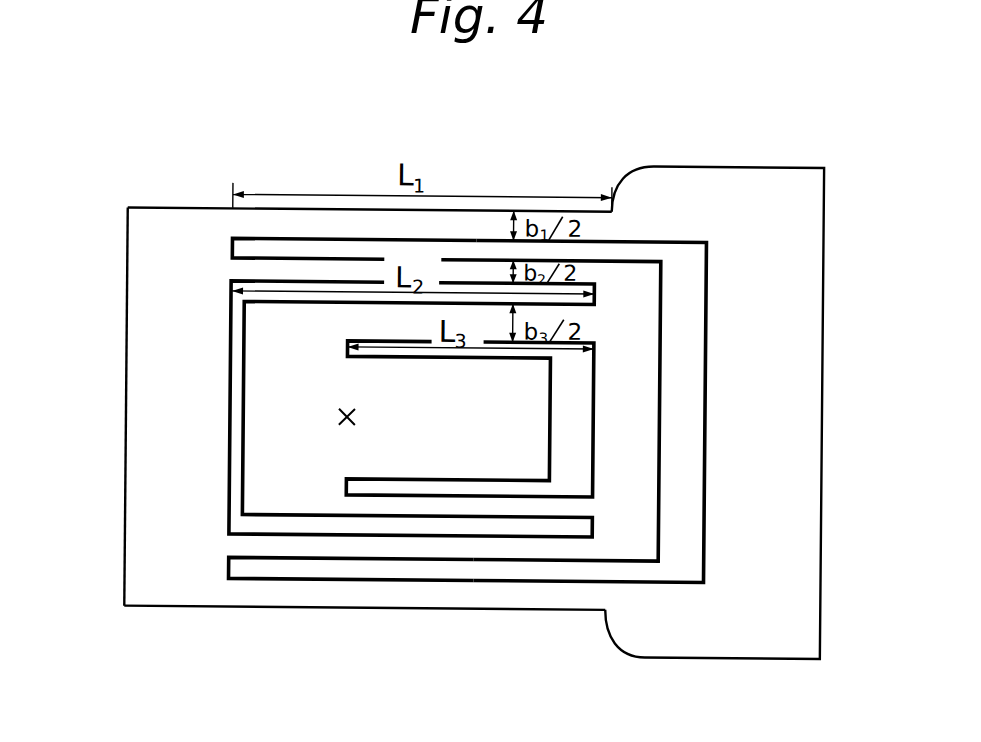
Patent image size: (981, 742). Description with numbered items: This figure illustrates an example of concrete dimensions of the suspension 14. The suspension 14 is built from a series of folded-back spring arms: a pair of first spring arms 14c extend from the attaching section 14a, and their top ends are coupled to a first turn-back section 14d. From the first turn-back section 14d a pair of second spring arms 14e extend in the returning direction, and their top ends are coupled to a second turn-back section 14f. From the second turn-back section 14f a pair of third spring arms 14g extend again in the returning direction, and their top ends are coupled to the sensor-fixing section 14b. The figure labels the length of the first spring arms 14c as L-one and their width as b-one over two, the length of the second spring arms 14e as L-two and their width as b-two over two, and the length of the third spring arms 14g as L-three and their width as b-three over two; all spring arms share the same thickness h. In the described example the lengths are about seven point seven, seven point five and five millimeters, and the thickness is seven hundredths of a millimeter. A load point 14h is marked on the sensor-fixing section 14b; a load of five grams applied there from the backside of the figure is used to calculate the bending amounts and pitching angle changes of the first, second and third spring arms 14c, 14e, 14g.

The suspension 14 is at (718, 143).
The attaching section 14a is at (785, 427).
The sensor-fixing section 14b is at (427, 460).
The first spring arms 14c is at (365, 596).
The first turn-back section 14d is at (145, 443).
The second spring arms 14e is at (284, 549).
The second turn-back section 14f is at (638, 389).
The third spring arms 14g is at (519, 500).
The load point 14h is at (345, 424).